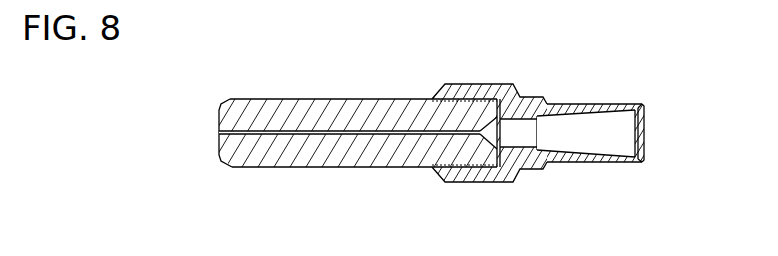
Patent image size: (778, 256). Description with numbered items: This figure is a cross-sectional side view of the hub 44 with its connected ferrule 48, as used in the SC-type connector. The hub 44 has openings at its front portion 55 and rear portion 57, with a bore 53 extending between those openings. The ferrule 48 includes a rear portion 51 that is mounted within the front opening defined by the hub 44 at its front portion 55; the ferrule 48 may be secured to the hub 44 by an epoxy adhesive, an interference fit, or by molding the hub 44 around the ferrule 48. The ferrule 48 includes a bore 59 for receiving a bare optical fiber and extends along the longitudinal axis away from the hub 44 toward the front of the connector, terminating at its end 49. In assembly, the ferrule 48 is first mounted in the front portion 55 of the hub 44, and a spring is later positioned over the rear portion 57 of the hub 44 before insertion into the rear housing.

The hub 44 is at (606, 131).
The ferrule 48 is at (342, 129).
The plug end 49 is at (219, 117).
The rear portion of the ferrule 51 is at (498, 116).
The bore 53 is at (603, 128).
The front portion of the hub 55 is at (440, 170).
The rear portion of the hub 57 is at (646, 141).
The bore 59 is at (339, 130).